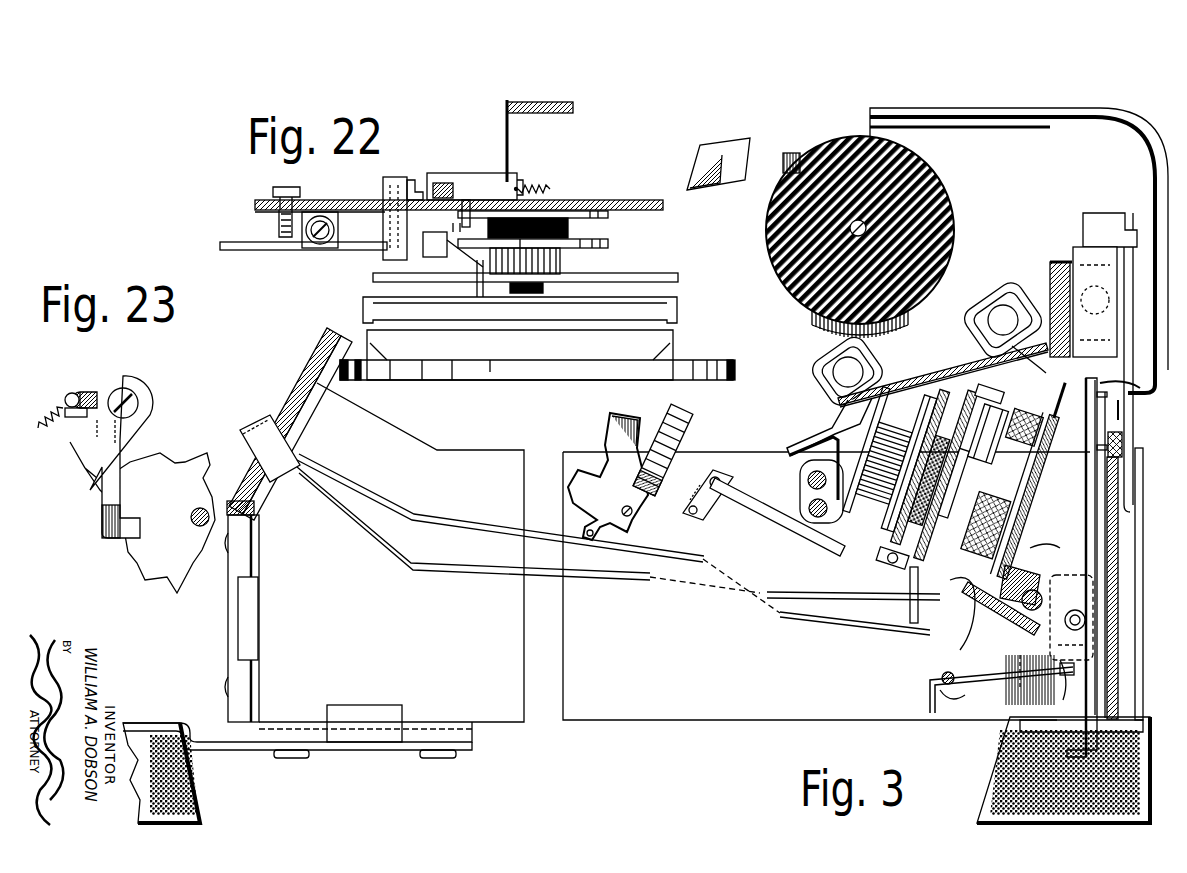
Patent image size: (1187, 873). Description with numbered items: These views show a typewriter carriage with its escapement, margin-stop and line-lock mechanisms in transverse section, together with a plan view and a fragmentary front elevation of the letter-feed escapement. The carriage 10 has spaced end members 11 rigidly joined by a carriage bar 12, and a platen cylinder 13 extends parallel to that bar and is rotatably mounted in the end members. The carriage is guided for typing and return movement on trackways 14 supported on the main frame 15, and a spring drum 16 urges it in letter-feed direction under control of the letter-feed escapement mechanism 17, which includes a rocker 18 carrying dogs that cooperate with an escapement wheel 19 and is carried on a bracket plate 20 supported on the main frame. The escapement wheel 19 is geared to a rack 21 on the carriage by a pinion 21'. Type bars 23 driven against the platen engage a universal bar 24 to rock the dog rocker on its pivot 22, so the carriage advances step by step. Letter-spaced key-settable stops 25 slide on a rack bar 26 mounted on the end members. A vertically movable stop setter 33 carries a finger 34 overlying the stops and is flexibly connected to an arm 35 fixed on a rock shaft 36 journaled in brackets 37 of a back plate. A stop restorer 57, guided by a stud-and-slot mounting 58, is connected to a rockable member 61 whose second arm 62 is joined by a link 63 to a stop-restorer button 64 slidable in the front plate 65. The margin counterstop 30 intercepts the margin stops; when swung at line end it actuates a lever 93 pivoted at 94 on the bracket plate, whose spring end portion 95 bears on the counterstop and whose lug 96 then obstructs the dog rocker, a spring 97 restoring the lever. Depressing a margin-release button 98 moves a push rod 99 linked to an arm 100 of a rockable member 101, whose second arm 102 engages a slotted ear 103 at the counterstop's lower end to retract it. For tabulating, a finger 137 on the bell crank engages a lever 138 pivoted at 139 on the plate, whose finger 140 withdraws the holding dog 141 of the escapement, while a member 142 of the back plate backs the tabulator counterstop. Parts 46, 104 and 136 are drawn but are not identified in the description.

In FIG. 3, the carriage 10 is at (977, 107).
In FIG. 3, the end members 11 is at (1033, 114).
In FIG. 3, the carriage bar 12 is at (935, 392).
In FIG. 3, the platen cylinder 13 is at (843, 138).
In FIG. 3, the trackways 14 is at (833, 399).
In FIG. 3, the main frame 15 is at (756, 455).
In FIG. 3, the spring drum 16 is at (1048, 438).
In FIG. 22, the letter-feed escapement mechanism 17 is at (606, 222).
In FIG. 3, the letter-feed escapement mechanism 17 is at (880, 513).
In FIG. 22, the dog rocker 18 is at (290, 250).
In FIG. 23, the dog rocker 18 is at (85, 452).
In FIG. 22, the escapement wheel 19 is at (608, 246).
In FIG. 23, the escapement wheel 19 is at (176, 448).
In FIG. 22, the bracket plate 20 is at (598, 200).
In FIG. 3, the bracket plate 20 is at (908, 600).
In FIG. 22, the rack 21 is at (528, 267).
In FIG. 3, the rack 21 is at (866, 450).
In FIG. 22, the pinion 21' is at (545, 255).
In FIG. 3, the pinion 21' is at (880, 463).
In FIG. 22, the pivot 22 is at (320, 248).
In FIG. 3, the pivot 22 is at (895, 556).
In FIG. 3, the type bars 23 is at (712, 166).
In FIG. 22, the universal bar 24 is at (448, 380).
In FIG. 3, the universal bar 24 is at (688, 420).
In FIG. 3, the key-settable stops 25 is at (1080, 250).
In FIG. 3, the rack bar 26 is at (1050, 280).
In FIG. 22, the margin counterstop 30 is at (573, 103).
In FIG. 3, the margin counterstop 30 is at (1088, 535).
In FIG. 3, the stop setter 33 is at (1135, 418).
In FIG. 3, the finger 34 is at (1100, 214).
In FIG. 3, the arm 35 is at (1118, 595).
In FIG. 3, the rock shaft 36 is at (1039, 578).
In FIG. 3, the brackets 37 is at (1045, 531).
In FIG. 3, the pad 46 is at (230, 504).
In FIG. 3, the stop restorer 57 is at (1095, 496).
In FIG. 3, the stud-and-slot mounting 58 is at (1125, 440).
In FIG. 3, the rockable member 61 is at (1020, 572).
In FIG. 3, the second arm 62 is at (1060, 580).
In FIG. 3, the link 63 is at (855, 628).
In FIG. 3, the stop-restorer button 64 is at (268, 438).
In FIG. 3, the front plate 65 is at (330, 348).
In FIG. 22, the lever 93 is at (467, 190).
In FIG. 3, the lever 93 is at (988, 436).
In FIG. 22, the pivot 94 is at (443, 183).
In FIG. 3, the pivot 94 is at (938, 536).
In FIG. 22, the spring end portion 95 is at (509, 135).
In FIG. 3, the spring end portion 95 is at (1048, 418).
In FIG. 22, the lug 96 is at (468, 200).
In FIG. 3, the lug 96 is at (964, 382).
In FIG. 22, the spring 97 is at (550, 188).
In FIG. 3, the margin-release button 98 is at (247, 445).
In FIG. 3, the push rod 99 is at (640, 582).
In FIG. 3, the arm 100 is at (960, 684).
In FIG. 3, the rockable member 101 is at (928, 703).
In FIG. 3, the second arm 102 is at (1020, 685).
In FIG. 3, the slotted ear 103 is at (1057, 700).
In FIG. 3, the clip 104 is at (983, 389).
In FIG. 3, the plate 136 is at (1060, 262).
In FIG. 3, the finger 137 is at (976, 603).
In FIG. 22, the lever 138 is at (412, 180).
In FIG. 3, the lever 138 is at (1000, 460).
In FIG. 3, the pivot 139 is at (988, 468).
In FIG. 22, the finger 140 is at (384, 190).
In FIG. 23, the finger 140 is at (70, 417).
In FIG. 22, the holding dog 141 is at (437, 250).
In FIG. 23, the holding dog 141 is at (86, 390).
In FIG. 3, the member 142 is at (1140, 388).